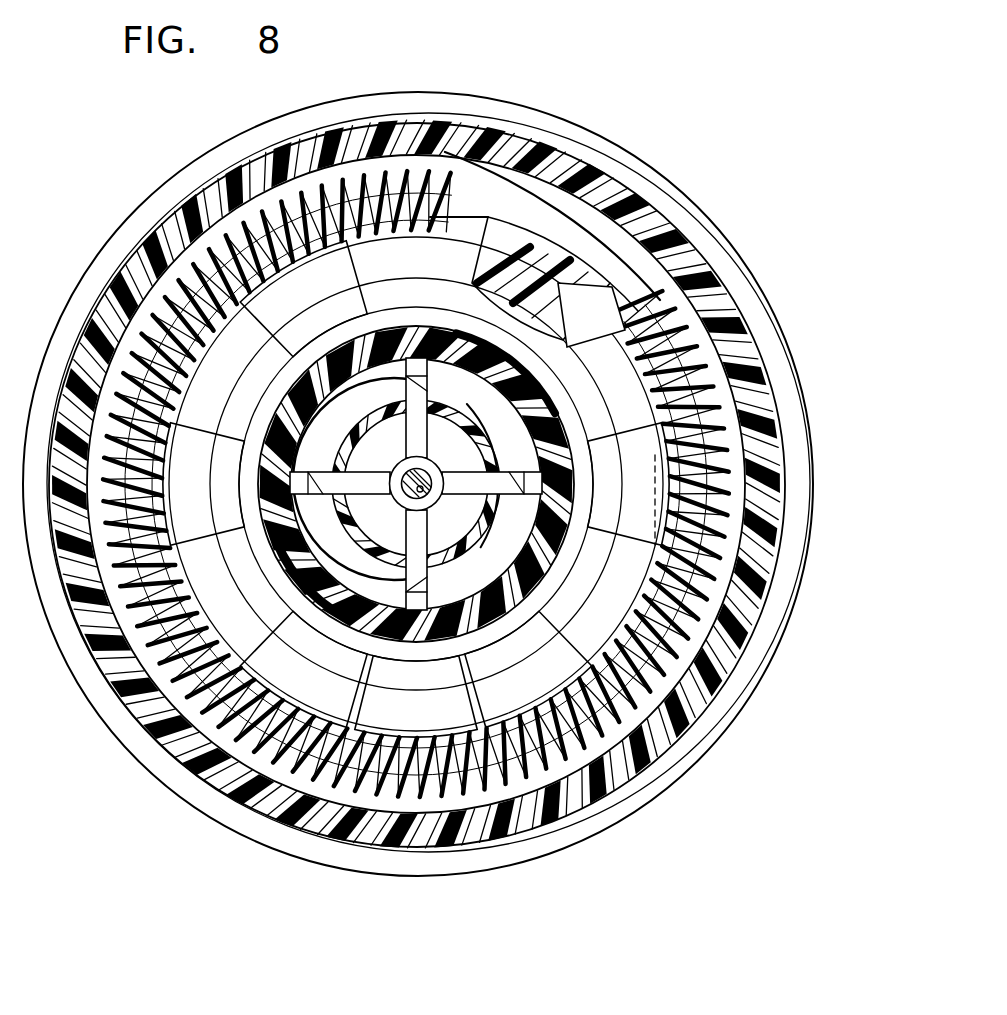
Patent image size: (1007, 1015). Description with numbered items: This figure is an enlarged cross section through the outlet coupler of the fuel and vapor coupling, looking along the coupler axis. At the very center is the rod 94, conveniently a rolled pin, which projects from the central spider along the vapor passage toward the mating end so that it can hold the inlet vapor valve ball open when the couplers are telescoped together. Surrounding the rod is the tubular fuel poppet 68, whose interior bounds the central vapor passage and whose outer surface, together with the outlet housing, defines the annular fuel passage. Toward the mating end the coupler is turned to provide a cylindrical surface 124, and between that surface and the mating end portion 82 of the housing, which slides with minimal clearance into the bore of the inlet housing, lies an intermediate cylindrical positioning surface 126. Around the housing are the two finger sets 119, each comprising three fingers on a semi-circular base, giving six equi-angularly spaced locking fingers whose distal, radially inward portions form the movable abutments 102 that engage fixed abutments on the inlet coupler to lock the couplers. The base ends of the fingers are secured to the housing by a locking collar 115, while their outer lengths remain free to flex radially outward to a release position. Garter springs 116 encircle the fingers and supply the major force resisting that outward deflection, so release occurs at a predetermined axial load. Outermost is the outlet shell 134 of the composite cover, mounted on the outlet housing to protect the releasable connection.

The outlet shell 134 is at (695, 244).
The garter springs 116 is at (727, 360).
The finger sets 119 is at (477, 203).
The movable abutments 102 is at (302, 345).
The cylindrical surface 124 is at (222, 322).
The intermediate cylindrical positioning surface 126 is at (258, 623).
The locking collar 115 is at (573, 250).
The mating end portion 82 is at (388, 643).
The tubular fuel poppet 68 is at (497, 547).
The rod 94 is at (437, 468).